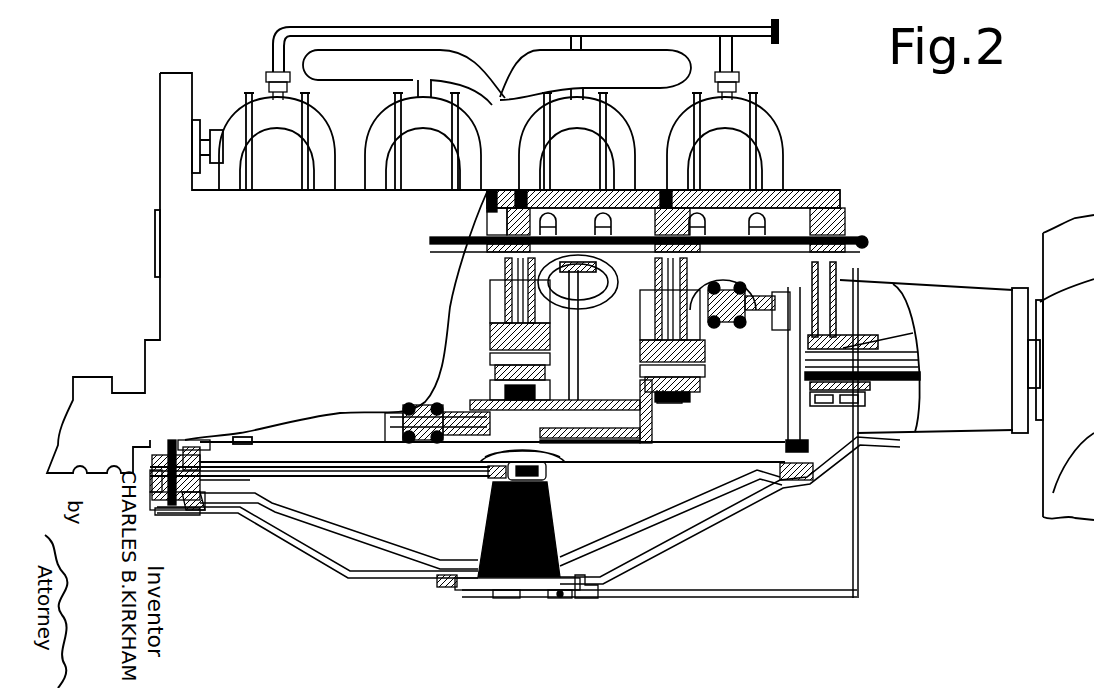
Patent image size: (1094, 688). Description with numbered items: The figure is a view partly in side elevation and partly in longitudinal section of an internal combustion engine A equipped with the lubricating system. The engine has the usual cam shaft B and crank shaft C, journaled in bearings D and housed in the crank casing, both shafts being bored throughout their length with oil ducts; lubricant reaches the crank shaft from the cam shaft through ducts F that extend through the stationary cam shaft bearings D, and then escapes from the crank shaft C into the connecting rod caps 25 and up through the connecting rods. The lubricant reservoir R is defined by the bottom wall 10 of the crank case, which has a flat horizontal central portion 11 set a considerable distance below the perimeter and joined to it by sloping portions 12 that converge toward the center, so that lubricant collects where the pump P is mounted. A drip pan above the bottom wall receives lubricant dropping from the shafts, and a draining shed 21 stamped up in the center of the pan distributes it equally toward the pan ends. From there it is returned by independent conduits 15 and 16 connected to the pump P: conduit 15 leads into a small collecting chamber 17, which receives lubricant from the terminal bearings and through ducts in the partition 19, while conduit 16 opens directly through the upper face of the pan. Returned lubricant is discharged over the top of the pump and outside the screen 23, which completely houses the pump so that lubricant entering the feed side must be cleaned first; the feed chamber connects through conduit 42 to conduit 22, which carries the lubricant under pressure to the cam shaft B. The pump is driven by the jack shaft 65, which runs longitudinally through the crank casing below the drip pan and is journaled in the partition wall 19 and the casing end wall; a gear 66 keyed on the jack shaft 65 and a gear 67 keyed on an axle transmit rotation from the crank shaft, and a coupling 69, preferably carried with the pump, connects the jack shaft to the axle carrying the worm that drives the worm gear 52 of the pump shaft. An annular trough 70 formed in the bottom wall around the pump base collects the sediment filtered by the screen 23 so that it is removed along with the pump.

The engine A is at (804, 200).
The cam shaft B is at (630, 254).
The crank shaft C is at (650, 420).
The bearings D is at (683, 403).
The ducts F is at (670, 295).
The pump P is at (552, 512).
The lubricant reservoir R is at (557, 566).
The bottom wall 10 is at (234, 515).
The flat horizontal central portion 11 is at (383, 574).
The sloping portions 12 is at (712, 522).
The conduit 15 is at (305, 516).
The conduit 16 is at (655, 516).
The collecting chamber 17 is at (165, 499).
The partition 19 is at (197, 450).
The draining shed 21 is at (512, 456).
The conduit 22 is at (745, 596).
The screen 23 is at (496, 581).
The connecting rod caps 25 is at (488, 386).
The conduit 42 is at (560, 598).
The worm gear 52 is at (547, 478).
The jack shaft 65 is at (320, 486).
The gear 66 is at (190, 512).
The gear 67 is at (172, 443).
The coupling 69 is at (488, 480).
The annular trough 70 is at (580, 583).